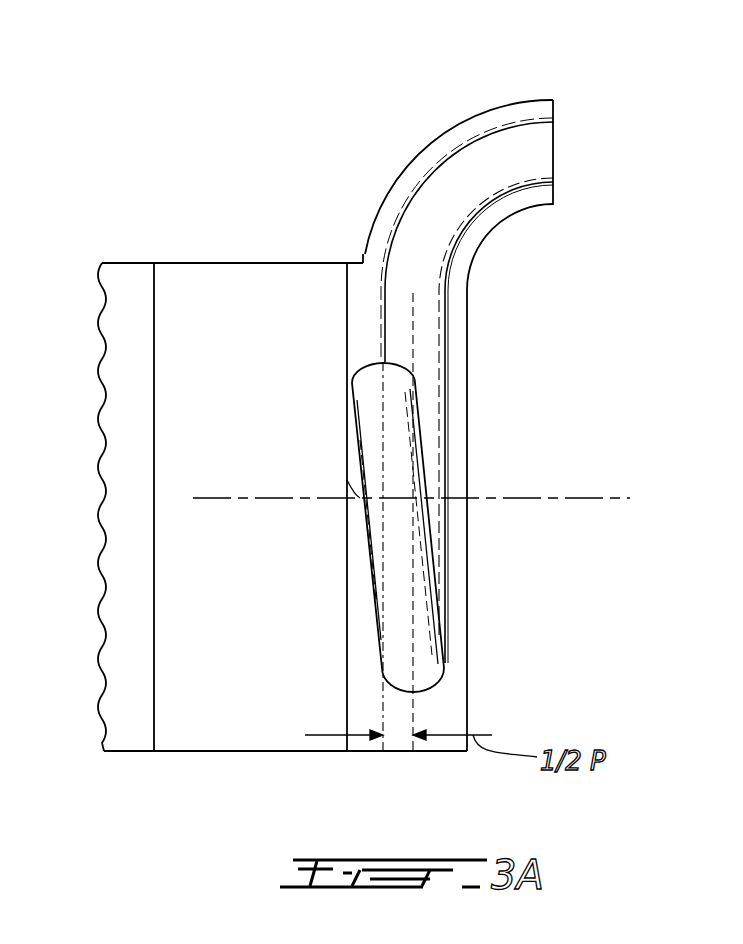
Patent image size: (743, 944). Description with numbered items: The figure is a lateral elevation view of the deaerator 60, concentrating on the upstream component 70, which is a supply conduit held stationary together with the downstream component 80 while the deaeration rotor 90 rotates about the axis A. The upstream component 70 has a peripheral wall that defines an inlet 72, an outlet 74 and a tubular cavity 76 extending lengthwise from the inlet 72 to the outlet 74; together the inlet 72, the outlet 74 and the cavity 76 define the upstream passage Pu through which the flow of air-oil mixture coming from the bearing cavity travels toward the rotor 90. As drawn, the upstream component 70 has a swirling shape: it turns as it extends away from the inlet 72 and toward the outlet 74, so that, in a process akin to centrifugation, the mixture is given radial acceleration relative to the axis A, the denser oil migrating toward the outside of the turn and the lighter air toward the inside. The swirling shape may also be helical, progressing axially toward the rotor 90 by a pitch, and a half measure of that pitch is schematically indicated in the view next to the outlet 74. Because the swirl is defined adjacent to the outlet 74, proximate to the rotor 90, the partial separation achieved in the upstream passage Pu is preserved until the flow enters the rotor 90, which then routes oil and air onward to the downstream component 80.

The deaerator 60 is at (230, 140).
The upstream component 70 is at (455, 357).
The inlet 72 is at (553, 182).
The outlet 74 is at (345, 466).
The cavity 76 is at (440, 292).
The downstream component 80 is at (130, 730).
The deaeration rotor 90 is at (253, 378).
The axis A is at (211, 501).
The upstream passage Pu is at (548, 150).